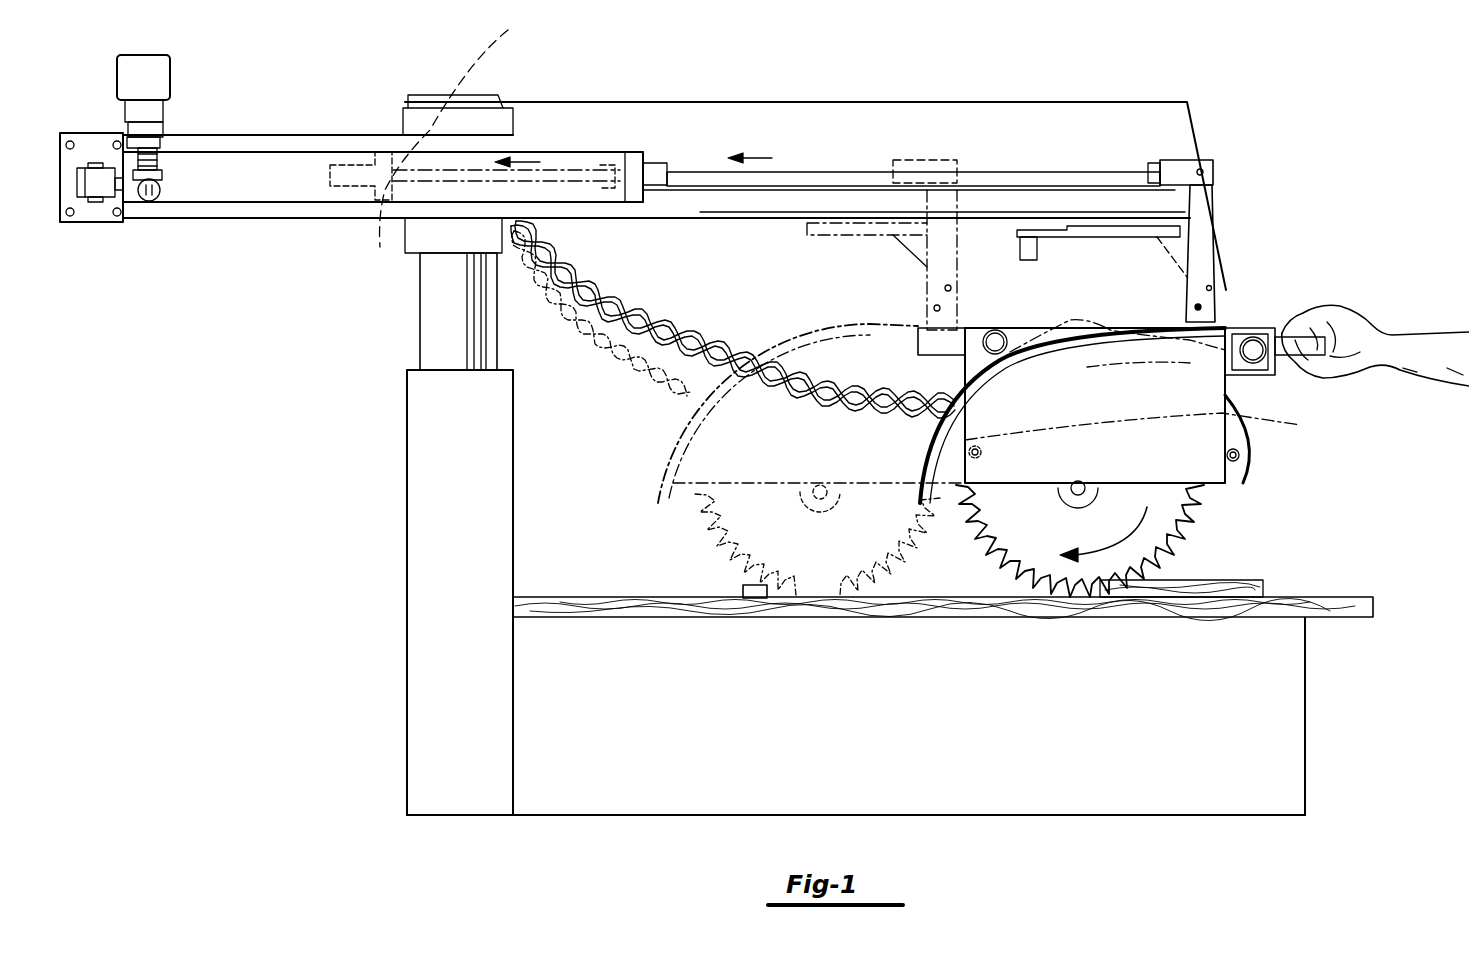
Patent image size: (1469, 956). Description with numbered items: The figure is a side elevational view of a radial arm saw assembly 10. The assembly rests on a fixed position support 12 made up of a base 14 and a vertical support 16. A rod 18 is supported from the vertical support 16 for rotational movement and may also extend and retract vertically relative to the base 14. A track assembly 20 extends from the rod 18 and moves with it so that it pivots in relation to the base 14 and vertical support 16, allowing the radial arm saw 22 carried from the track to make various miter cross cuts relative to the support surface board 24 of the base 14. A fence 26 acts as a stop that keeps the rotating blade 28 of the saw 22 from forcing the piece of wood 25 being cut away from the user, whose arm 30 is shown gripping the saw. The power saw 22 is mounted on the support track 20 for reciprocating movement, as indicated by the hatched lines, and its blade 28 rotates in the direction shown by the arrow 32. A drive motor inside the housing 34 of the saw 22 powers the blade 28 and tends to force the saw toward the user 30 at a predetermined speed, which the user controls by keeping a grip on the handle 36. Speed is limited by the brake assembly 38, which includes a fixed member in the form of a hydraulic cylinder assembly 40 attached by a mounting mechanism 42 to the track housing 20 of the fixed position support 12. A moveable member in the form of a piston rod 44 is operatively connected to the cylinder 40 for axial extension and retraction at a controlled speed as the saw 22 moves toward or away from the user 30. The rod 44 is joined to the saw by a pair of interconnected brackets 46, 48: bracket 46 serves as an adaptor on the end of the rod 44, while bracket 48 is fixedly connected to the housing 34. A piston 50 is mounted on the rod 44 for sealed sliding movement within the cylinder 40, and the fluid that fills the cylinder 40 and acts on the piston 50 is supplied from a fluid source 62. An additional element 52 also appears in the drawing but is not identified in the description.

The radial arm saw assembly 10 is at (1252, 180).
The fixed position support 12 is at (1318, 705).
The base 14 is at (1277, 775).
The vertical support 16 is at (490, 550).
The rod 18 is at (470, 313).
The track assembly 20 is at (797, 119).
The radial arm saw 22 is at (1225, 387).
The support surface board 24 is at (1302, 597).
The piece of wood 25 is at (1177, 583).
The fence 26 is at (745, 587).
The rotating blade 28 is at (1195, 512).
The user's arm 30 is at (1413, 345).
The arrow 32 is at (1105, 512).
The housing 34 is at (1243, 453).
The handle 36 is at (1280, 336).
The brake assembly 38 is at (372, 120).
The hydraulic cylinder assembly 40 is at (257, 193).
The mounting mechanism 42 is at (127, 222).
The piston rod 44 is at (440, 170).
The bracket 46 is at (1190, 165).
The bracket 48 is at (1205, 237).
The piston 50 is at (631, 150).
The hose 52 is at (430, 157).
The fluid source 62 is at (172, 80).